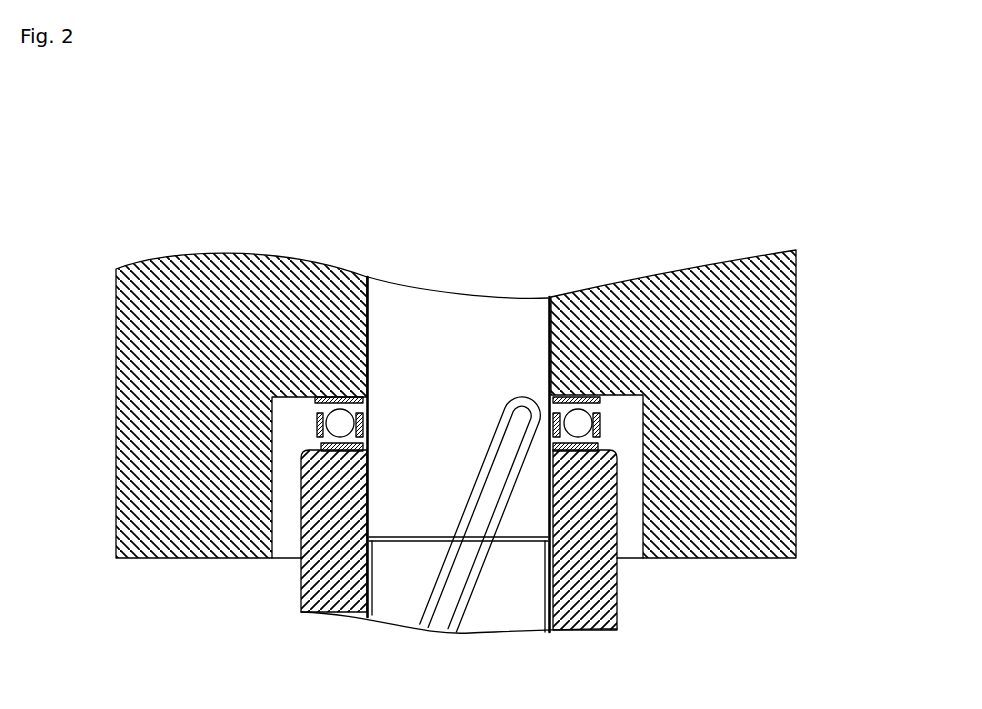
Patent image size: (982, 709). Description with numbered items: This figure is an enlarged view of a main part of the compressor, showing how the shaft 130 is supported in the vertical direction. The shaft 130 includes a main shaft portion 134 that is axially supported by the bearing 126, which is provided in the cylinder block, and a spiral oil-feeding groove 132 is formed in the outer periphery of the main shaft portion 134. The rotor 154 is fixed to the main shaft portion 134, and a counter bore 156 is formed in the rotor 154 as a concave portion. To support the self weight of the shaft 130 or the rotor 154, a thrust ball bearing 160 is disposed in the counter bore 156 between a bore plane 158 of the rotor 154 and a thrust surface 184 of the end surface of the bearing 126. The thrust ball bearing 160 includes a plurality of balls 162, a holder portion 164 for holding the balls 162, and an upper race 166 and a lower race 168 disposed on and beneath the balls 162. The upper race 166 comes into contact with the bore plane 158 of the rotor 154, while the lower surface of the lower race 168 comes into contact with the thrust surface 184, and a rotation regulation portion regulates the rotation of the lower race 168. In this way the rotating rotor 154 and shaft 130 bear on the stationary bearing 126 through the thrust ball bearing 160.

The bearing 126 is at (595, 597).
The shaft 130 is at (457, 305).
The spiral oil-feeding groove 132 is at (442, 608).
The main shaft portion 134 is at (396, 590).
The rotor 154 is at (692, 300).
The counter bore 156 is at (285, 440).
The bore plane 158 is at (308, 395).
The thrust ball bearing 160 is at (318, 423).
The balls 162 is at (576, 419).
The holder portion 164 is at (599, 425).
The upper race 166 is at (572, 392).
The lower race 168 is at (604, 448).
The thrust surface 184 is at (305, 455).